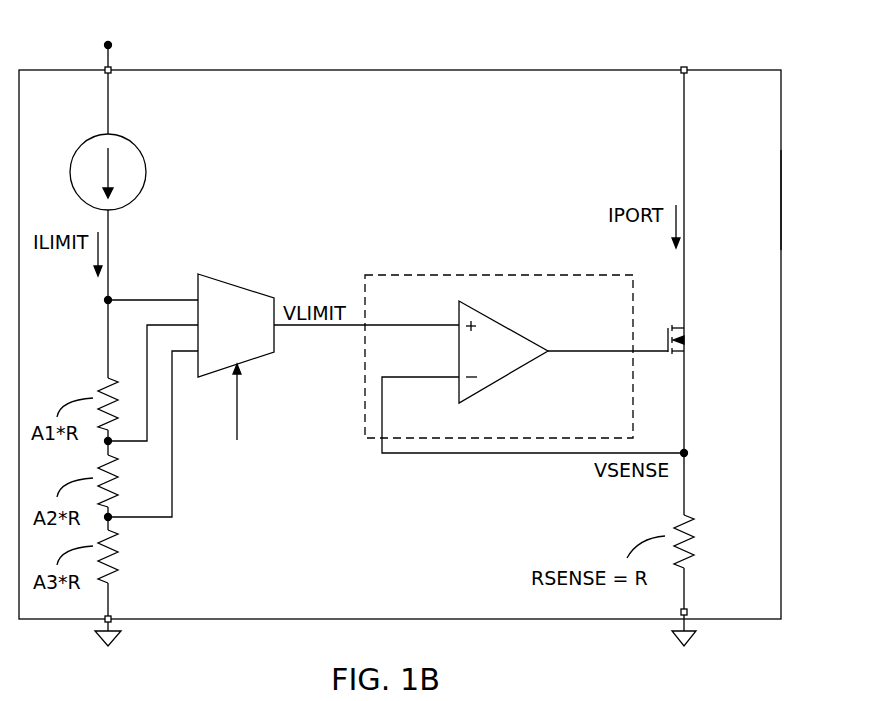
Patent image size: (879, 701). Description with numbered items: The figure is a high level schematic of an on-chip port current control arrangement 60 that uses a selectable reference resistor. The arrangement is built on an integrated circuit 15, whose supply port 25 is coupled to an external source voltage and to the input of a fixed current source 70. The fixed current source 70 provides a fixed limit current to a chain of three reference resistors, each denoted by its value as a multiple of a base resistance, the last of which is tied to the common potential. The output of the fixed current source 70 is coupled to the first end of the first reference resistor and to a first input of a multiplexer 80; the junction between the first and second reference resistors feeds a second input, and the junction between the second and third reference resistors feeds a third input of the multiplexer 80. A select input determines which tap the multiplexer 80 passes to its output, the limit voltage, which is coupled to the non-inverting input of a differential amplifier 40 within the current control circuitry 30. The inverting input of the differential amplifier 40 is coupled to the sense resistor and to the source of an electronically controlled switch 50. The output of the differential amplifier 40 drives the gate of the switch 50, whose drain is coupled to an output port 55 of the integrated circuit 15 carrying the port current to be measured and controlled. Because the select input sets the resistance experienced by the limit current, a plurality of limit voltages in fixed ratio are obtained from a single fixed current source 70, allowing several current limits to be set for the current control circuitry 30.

The integrated circuit 15 is at (781, 198).
The port 25 is at (112, 68).
The current control circuitry 30 is at (524, 339).
The differential amplifier 40 is at (505, 325).
The electronically controlled switch 50 is at (678, 355).
The port 55 is at (682, 68).
The on-chip port current control arrangement 60 is at (780, 43).
The fixed current source 70 is at (128, 140).
The multiplexer 80 is at (237, 283).